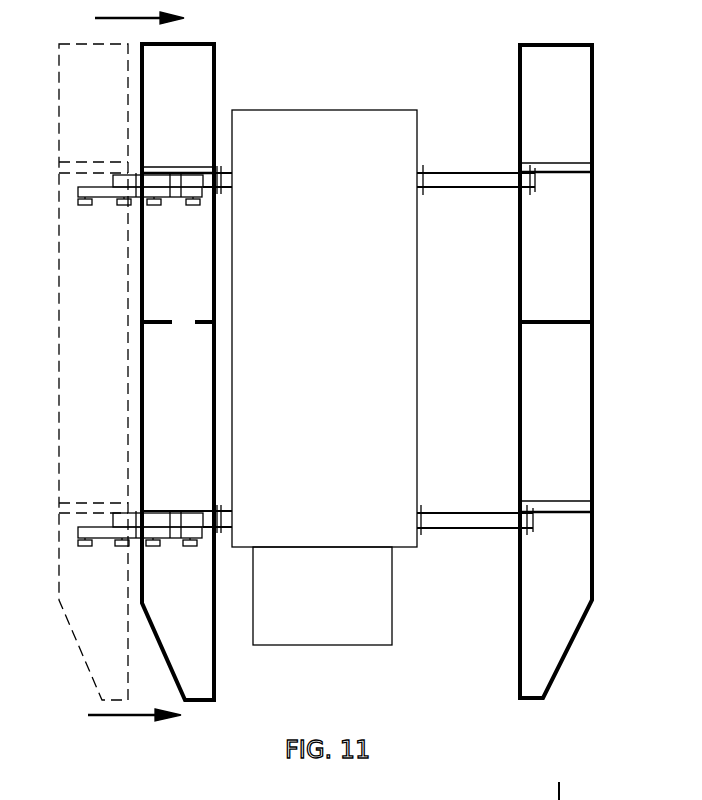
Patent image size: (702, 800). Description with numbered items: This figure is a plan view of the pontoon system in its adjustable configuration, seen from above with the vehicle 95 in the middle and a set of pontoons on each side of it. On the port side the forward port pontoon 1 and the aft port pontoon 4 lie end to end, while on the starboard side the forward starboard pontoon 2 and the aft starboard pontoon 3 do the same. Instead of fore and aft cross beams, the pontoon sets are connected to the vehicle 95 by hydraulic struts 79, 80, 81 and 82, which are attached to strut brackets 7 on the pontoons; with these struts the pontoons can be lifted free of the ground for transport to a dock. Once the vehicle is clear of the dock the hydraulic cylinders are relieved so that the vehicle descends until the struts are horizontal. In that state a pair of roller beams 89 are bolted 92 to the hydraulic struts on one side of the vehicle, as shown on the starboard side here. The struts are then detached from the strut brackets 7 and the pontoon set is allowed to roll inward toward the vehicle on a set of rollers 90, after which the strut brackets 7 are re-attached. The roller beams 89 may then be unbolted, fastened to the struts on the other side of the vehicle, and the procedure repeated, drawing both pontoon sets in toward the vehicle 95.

The forward port pontoon 1 is at (540, 628).
The forward starboard pontoon 2 is at (188, 652).
The aft starboard pontoon 3 is at (200, 84).
The aft port pontoon 4 is at (540, 88).
The strut bracket 7 is at (163, 165).
The hydraulic strut 79 is at (486, 520).
The hydraulic strut 80 is at (207, 522).
The hydraulic strut 81 is at (476, 178).
The hydraulic strut 82 is at (210, 180).
The roller beam 89 is at (105, 190).
The rollers 90 is at (190, 540).
The bolts 92 is at (192, 540).
The vehicle 95 is at (343, 145).